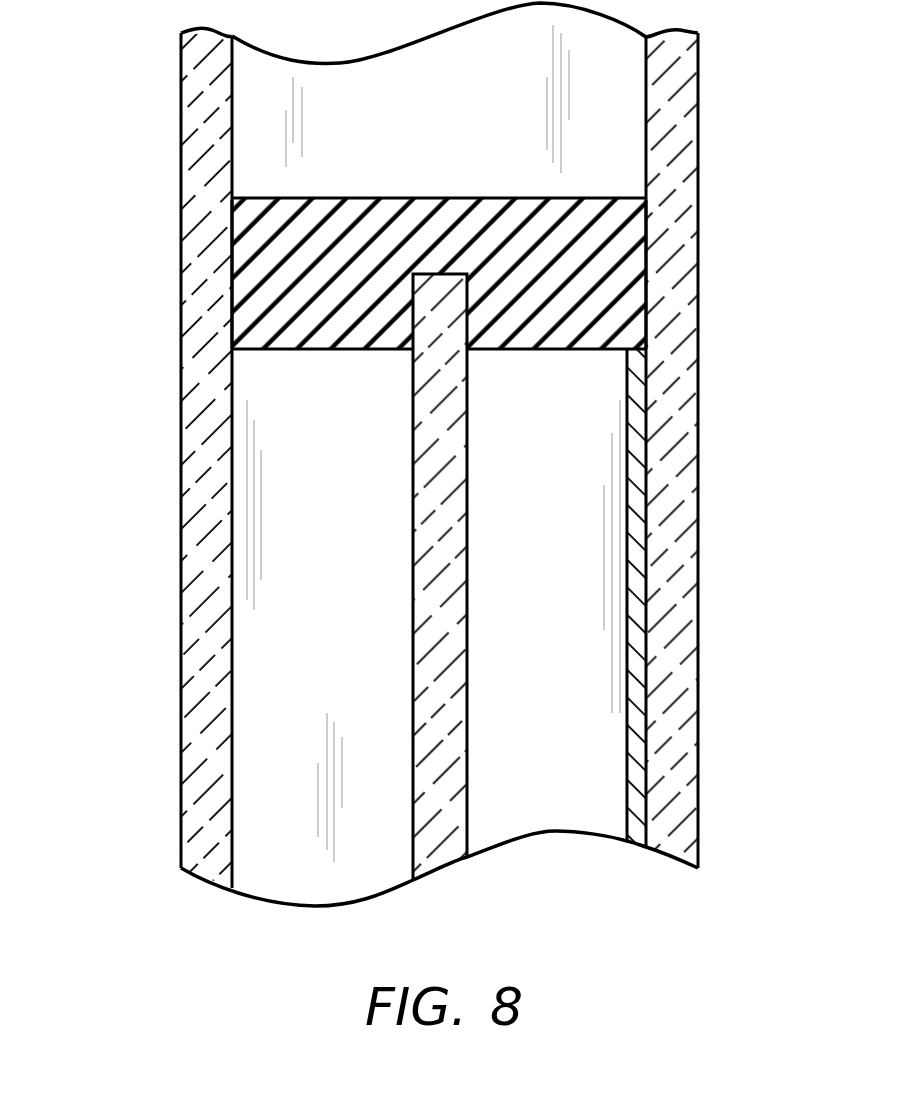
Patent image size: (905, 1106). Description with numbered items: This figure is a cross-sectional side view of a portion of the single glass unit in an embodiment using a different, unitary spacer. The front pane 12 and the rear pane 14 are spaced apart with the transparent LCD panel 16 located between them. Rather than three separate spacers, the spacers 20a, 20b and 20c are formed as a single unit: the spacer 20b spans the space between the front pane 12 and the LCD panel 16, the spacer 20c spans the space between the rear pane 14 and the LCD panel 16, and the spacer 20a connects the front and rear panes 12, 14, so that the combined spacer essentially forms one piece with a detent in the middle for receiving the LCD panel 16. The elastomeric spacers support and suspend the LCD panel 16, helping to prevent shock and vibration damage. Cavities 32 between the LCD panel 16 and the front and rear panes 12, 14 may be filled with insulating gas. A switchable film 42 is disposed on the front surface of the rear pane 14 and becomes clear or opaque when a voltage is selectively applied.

The front pane 12 is at (198, 287).
The rear pane 14 is at (681, 128).
The transparent LCD panel 16 is at (445, 635).
The spacer 20a is at (447, 217).
The spacer 20b is at (250, 313).
The spacer 20c is at (610, 311).
The cavities 32 is at (333, 750).
The switchable film 42 is at (637, 560).